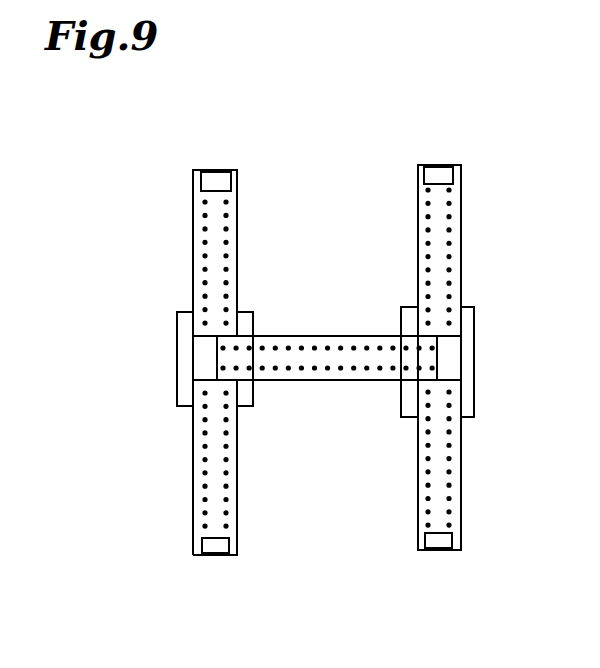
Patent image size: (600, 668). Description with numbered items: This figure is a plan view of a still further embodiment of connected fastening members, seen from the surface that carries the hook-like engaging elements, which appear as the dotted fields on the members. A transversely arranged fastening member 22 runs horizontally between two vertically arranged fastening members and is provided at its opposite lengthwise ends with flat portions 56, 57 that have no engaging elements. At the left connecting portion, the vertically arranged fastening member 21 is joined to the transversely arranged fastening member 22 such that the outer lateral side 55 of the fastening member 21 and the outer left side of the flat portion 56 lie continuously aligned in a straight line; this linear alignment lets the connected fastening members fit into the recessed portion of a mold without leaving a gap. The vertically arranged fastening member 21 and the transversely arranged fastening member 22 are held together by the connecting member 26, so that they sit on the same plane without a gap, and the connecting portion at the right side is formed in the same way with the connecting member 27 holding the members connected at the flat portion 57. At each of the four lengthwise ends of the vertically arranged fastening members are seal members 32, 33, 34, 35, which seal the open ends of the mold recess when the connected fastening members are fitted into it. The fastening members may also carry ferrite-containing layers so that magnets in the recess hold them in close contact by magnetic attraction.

The vertically arranged fastening member 21 is at (193, 246).
The transversely arranged fastening member 22 is at (320, 336).
The connecting member 26 is at (182, 347).
The connecting member 27 is at (470, 345).
The seal member 32 is at (214, 178).
The seal member 33 is at (228, 548).
The seal member 34 is at (453, 546).
The seal member 35 is at (440, 172).
The outer lateral side 55 is at (193, 282).
The flat portion 56 is at (195, 362).
The flat portion 57 is at (447, 358).